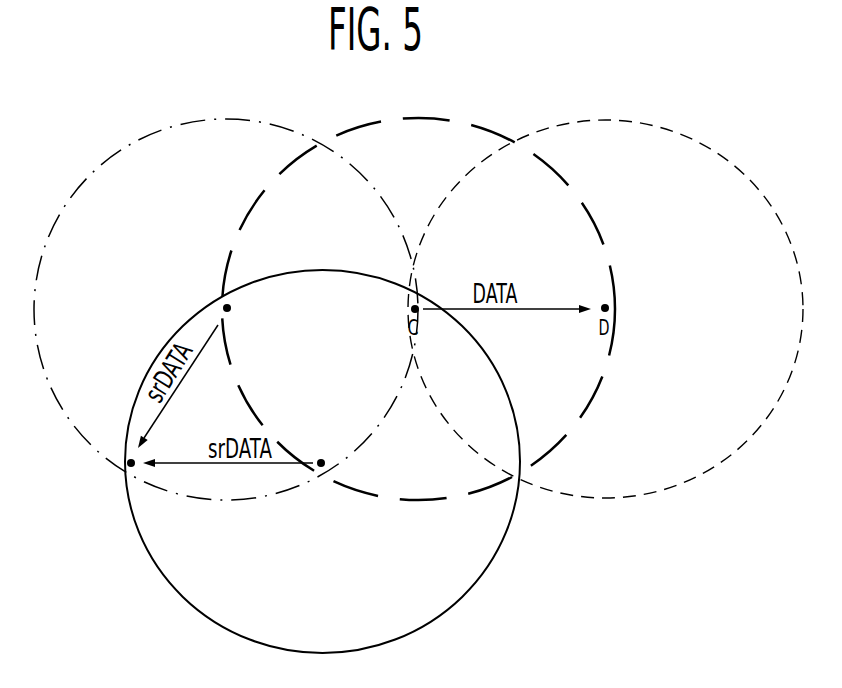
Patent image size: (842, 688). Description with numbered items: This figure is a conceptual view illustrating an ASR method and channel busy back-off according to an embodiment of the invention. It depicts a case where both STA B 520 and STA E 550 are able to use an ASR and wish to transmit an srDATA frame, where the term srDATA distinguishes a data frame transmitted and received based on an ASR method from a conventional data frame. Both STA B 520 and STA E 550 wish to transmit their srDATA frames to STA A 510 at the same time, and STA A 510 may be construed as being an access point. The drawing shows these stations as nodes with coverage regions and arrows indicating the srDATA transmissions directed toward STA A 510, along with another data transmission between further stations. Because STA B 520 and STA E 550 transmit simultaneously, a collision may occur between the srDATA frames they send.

The STA A 510 is at (125, 463).
The STA B 520 is at (227, 303).
The STA E 550 is at (328, 462).